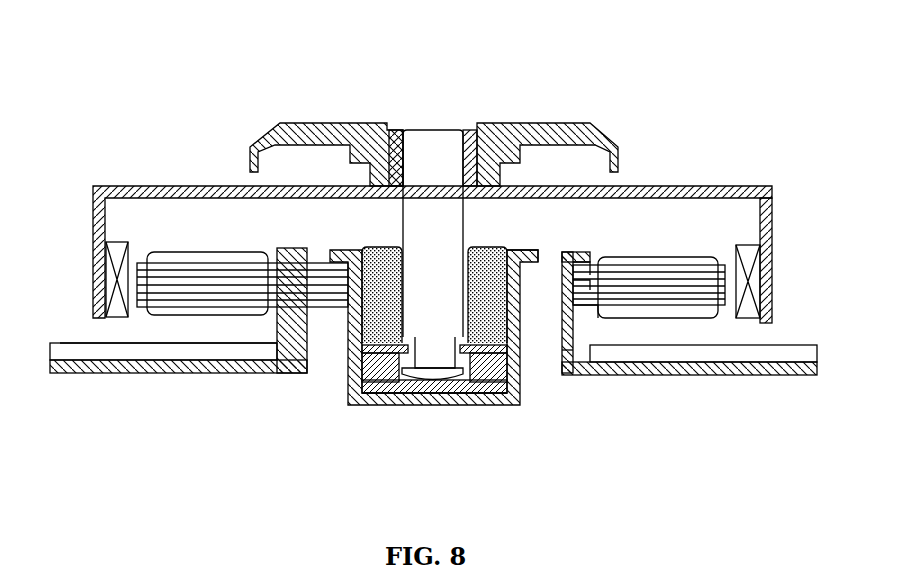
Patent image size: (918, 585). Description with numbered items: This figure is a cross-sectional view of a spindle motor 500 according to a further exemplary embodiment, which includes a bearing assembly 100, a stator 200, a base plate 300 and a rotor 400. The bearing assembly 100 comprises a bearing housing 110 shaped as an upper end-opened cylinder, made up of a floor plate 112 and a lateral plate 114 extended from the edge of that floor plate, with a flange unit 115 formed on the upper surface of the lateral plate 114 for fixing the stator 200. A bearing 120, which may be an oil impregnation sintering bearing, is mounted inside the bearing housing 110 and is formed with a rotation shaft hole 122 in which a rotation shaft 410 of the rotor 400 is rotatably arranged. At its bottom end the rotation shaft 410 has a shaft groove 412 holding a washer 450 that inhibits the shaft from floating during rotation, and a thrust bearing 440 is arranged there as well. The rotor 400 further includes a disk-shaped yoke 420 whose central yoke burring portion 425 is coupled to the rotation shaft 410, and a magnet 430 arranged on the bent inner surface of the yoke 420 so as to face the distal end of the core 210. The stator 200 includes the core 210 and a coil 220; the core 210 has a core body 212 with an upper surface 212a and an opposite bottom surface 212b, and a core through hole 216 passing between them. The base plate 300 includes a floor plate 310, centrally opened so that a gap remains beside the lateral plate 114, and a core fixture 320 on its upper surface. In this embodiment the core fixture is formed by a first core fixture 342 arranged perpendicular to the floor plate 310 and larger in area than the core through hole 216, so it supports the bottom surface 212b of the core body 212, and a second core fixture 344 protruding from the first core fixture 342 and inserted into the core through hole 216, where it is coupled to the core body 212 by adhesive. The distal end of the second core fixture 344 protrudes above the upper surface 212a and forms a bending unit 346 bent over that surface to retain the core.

The bearing assembly 100 is at (429, 354).
The bearing housing 110 is at (586, 430).
The floor plate 112 is at (487, 394).
The lateral plate 114 is at (526, 383).
The flange unit 115 is at (522, 250).
The bearing 120 is at (486, 252).
The rotation shaft hole 122 is at (388, 252).
The stator 200 is at (651, 322).
The core 210 is at (730, 300).
The core body 212 is at (592, 316).
The upper surface 212a is at (310, 247).
The bottom surface 212b is at (326, 310).
The core through hole 216 is at (583, 277).
The coil 220 is at (697, 262).
The base plate 300 is at (163, 368).
The floor plate 310 is at (225, 373).
The core fixture 320 is at (293, 316).
The first core fixture 342 is at (572, 362).
The second core fixture 344 is at (567, 302).
The bending unit 346 is at (581, 262).
The rotor 400 is at (714, 182).
The rotation shaft 410 is at (427, 138).
The shaft groove 412 is at (420, 382).
The yoke 420 is at (767, 217).
The yoke burring portion 425 is at (476, 135).
The magnet 430 is at (748, 262).
The thrust bearing 440 is at (462, 395).
The washer 450 is at (383, 352).
The spindle motor 500 is at (596, 100).